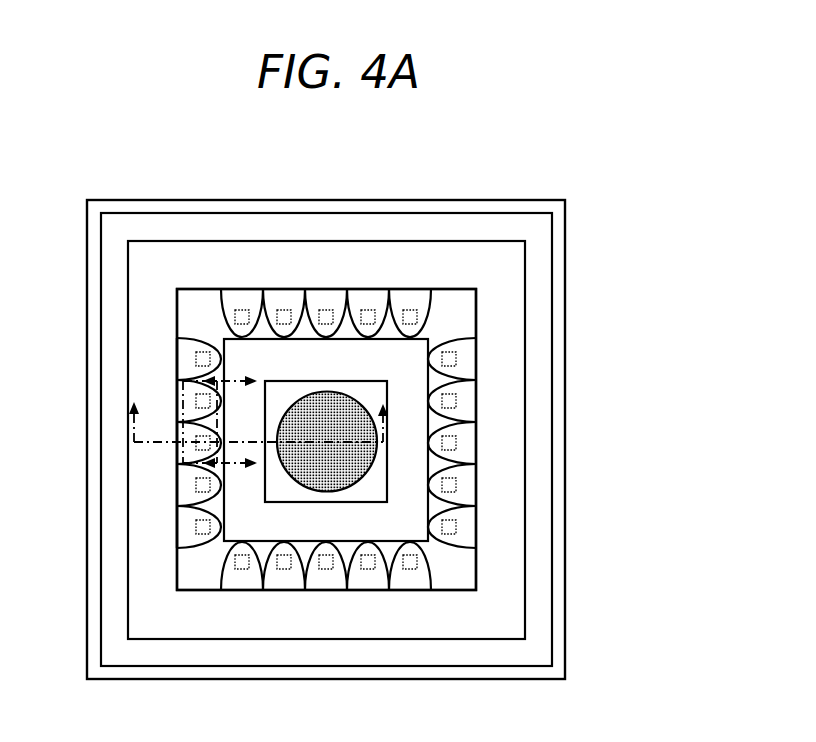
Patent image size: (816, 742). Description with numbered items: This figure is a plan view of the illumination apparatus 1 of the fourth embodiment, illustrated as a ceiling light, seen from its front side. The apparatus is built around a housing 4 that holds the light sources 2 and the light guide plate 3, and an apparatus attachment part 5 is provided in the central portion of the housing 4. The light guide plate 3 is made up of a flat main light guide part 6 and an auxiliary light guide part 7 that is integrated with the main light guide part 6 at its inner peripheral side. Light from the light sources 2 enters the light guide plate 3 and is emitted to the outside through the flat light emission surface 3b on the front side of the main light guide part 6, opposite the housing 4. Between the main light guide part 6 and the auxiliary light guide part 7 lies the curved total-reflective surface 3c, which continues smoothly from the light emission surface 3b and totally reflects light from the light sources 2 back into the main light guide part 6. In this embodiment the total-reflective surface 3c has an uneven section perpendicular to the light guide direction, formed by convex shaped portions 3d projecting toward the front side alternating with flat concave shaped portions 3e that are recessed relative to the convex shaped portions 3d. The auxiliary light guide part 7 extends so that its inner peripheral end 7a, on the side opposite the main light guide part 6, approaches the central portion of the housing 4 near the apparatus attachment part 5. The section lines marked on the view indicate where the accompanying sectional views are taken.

The illumination apparatus 1 is at (642, 185).
The light sources 2 is at (457, 355).
The light guide plate 3 is at (640, 445).
The light emission surface 3b is at (332, 368).
The total-reflective surface 3c is at (206, 316).
The convex shaped portions 3d is at (187, 532).
The concave shaped portions 3e is at (188, 505).
The housing 4 is at (560, 263).
The apparatus attachment part 5 is at (345, 467).
The main light guide part 6 is at (487, 480).
The auxiliary light guide part 7 is at (400, 525).
The inner peripheral end 7a is at (366, 377).